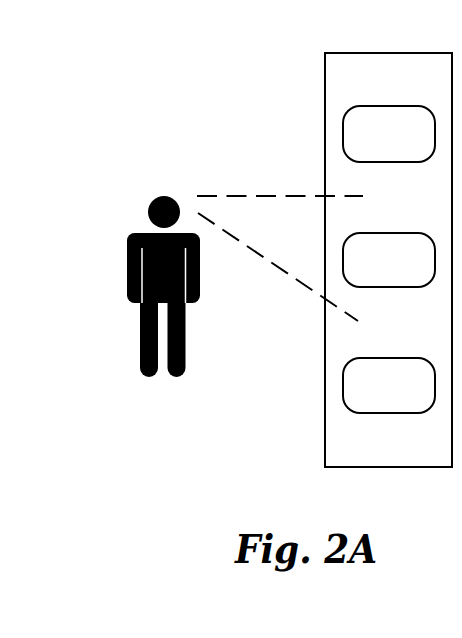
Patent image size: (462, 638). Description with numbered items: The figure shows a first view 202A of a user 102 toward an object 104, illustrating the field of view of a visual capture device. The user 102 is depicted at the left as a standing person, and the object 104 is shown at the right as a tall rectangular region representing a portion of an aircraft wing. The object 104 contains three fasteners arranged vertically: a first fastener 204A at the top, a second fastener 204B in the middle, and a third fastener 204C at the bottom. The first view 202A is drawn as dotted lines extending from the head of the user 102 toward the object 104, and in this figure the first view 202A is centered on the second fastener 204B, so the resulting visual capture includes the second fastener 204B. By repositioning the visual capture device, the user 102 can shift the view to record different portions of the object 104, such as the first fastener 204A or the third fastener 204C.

The user 102 is at (163, 302).
The object 104 is at (439, 458).
The first view 202A is at (287, 145).
The first fastener 204A is at (413, 144).
The second fastener 204B is at (413, 268).
The third fastener 204C is at (413, 396).